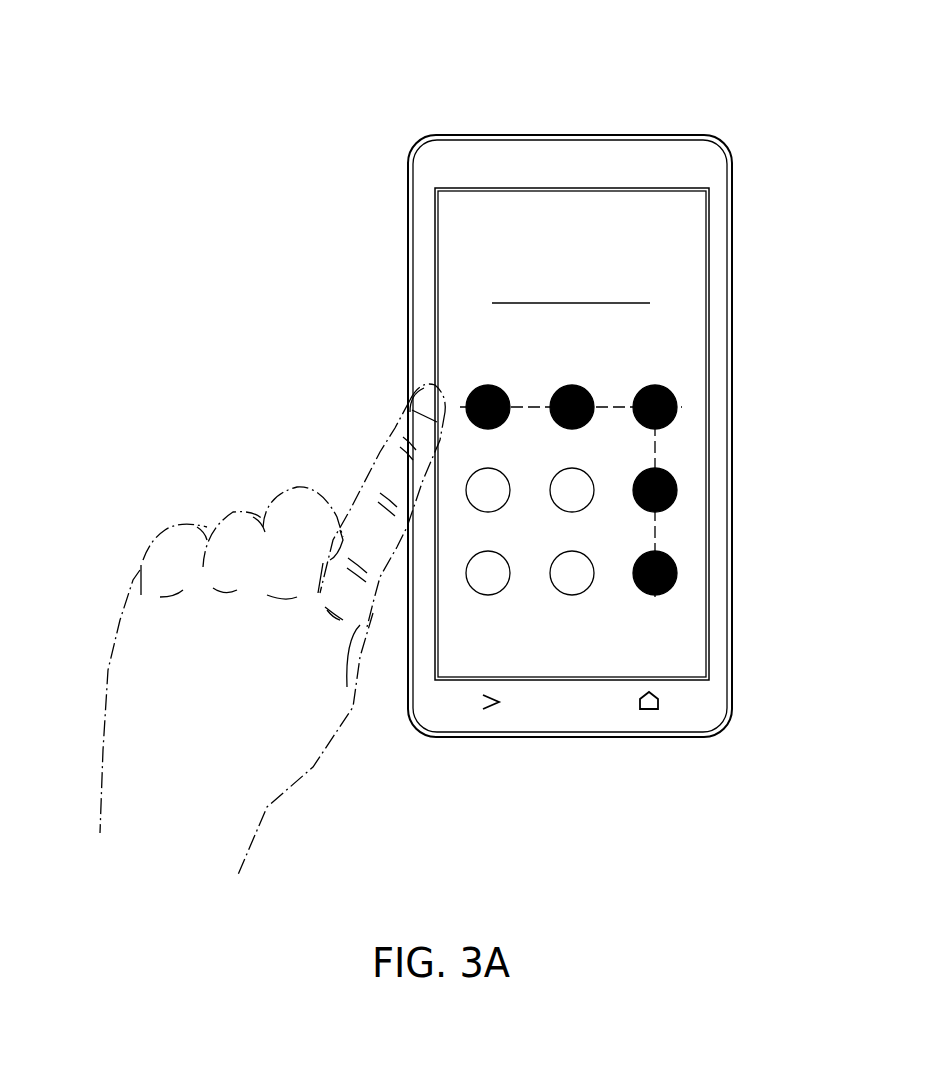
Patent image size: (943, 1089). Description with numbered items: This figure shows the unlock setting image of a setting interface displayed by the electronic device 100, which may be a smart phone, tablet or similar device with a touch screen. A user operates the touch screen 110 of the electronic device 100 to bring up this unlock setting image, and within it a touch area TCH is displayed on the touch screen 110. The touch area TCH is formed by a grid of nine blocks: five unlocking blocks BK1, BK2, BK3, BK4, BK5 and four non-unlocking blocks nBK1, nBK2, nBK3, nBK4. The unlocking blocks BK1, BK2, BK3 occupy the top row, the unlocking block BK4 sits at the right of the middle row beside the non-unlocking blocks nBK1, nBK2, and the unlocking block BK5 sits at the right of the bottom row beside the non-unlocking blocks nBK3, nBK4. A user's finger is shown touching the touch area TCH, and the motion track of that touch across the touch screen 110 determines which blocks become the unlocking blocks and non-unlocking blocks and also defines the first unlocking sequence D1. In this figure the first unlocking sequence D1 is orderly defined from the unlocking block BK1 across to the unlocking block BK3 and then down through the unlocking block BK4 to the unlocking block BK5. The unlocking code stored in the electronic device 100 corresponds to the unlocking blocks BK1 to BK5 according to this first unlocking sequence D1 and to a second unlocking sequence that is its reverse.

The electronic device 100 is at (407, 118).
The touch screen 110 is at (683, 263).
The first unlocking sequence D1 is at (620, 404).
The touch area TCH is at (685, 499).
The unlocking block BK1 is at (488, 422).
The unlocking block BK2 is at (572, 422).
The unlocking block BK3 is at (655, 422).
The unlocking block BK4 is at (655, 505).
The unlocking block BK5 is at (655, 588).
The non-unlocking block nBK1 is at (491, 505).
The non-unlocking block nBK2 is at (575, 505).
The non-unlocking block nBK3 is at (491, 588).
The non-unlocking block nBK4 is at (575, 588).